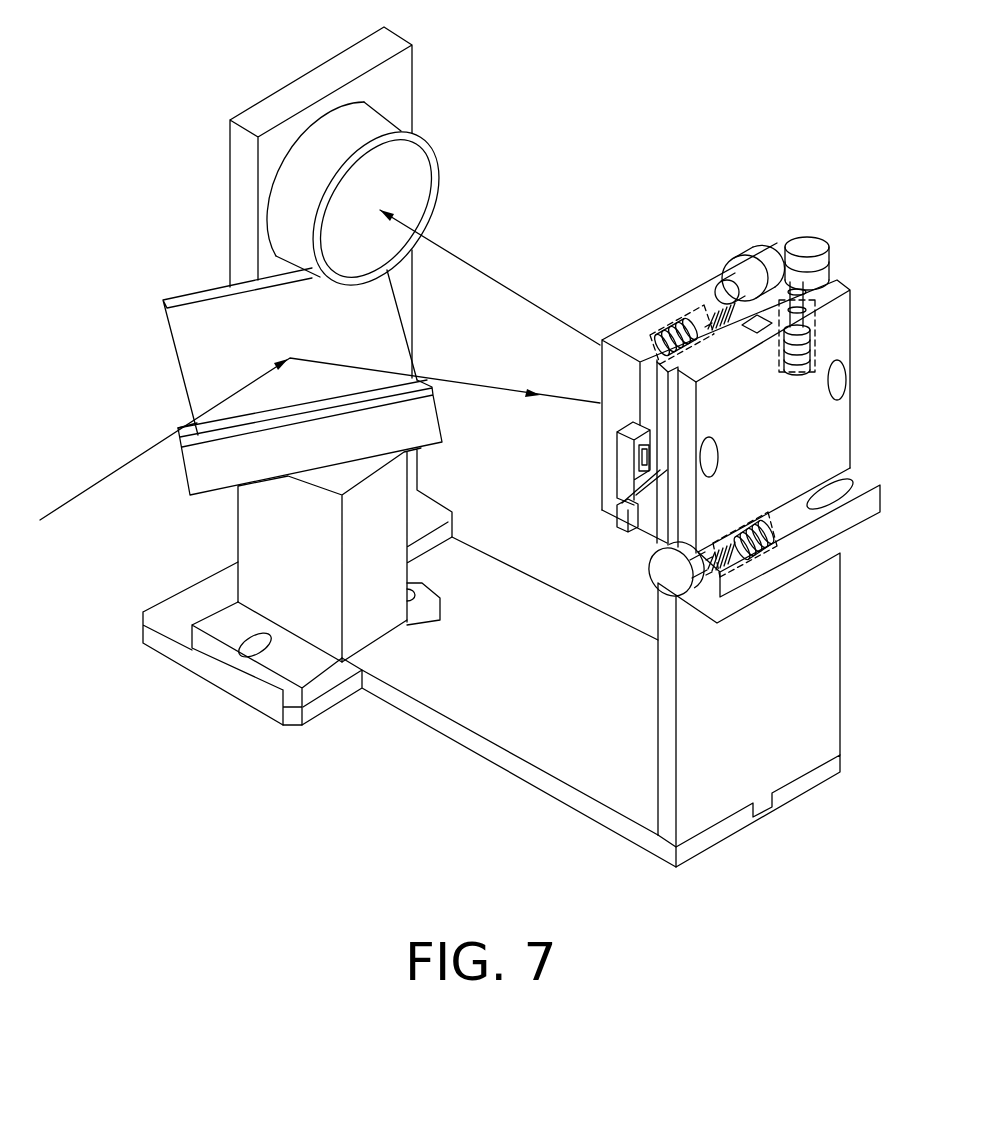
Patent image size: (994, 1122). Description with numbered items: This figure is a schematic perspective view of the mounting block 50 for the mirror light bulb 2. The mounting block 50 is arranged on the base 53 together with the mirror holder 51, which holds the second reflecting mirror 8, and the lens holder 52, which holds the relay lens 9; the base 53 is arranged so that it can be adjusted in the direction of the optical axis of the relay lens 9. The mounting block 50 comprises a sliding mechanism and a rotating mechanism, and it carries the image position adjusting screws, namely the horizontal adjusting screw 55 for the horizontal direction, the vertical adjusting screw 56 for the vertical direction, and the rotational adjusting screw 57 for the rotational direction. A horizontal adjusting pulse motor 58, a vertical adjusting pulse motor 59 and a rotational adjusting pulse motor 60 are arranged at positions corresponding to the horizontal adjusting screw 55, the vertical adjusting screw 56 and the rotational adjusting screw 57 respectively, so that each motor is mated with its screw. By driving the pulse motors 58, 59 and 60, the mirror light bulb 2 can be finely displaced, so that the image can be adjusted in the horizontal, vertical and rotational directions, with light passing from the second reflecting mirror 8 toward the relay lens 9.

The mirror light bulb 2 is at (710, 270).
The second reflecting mirror 8 is at (190, 297).
The relay lens 9 is at (423, 168).
The mounting block 50 is at (852, 313).
The mirror holder 51 is at (238, 532).
The lens holder 52 is at (417, 87).
The base 53 is at (460, 745).
The horizontal adjusting screw 55 is at (718, 603).
The vertical adjusting screw 56 is at (810, 317).
The rotational adjusting screw 57 is at (708, 318).
The horizontal adjusting pulse motor 58 is at (690, 600).
The vertical adjusting pulse motor 59 is at (823, 245).
The rotational adjusting pulse motor 60 is at (742, 253).